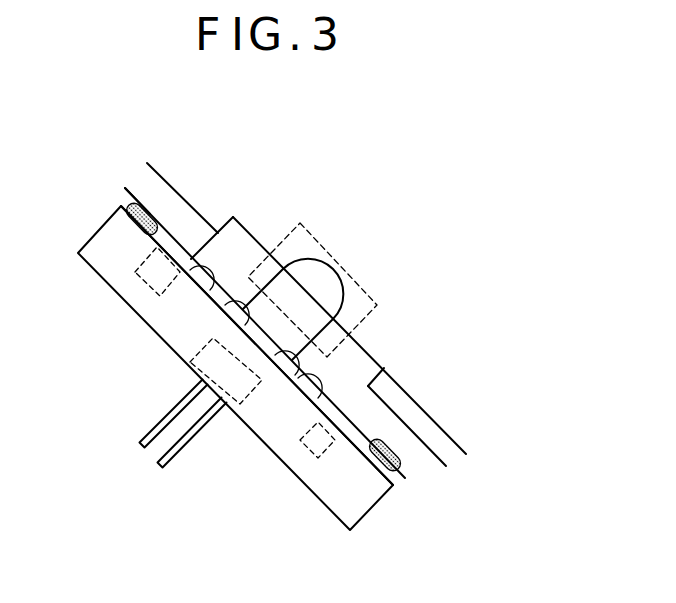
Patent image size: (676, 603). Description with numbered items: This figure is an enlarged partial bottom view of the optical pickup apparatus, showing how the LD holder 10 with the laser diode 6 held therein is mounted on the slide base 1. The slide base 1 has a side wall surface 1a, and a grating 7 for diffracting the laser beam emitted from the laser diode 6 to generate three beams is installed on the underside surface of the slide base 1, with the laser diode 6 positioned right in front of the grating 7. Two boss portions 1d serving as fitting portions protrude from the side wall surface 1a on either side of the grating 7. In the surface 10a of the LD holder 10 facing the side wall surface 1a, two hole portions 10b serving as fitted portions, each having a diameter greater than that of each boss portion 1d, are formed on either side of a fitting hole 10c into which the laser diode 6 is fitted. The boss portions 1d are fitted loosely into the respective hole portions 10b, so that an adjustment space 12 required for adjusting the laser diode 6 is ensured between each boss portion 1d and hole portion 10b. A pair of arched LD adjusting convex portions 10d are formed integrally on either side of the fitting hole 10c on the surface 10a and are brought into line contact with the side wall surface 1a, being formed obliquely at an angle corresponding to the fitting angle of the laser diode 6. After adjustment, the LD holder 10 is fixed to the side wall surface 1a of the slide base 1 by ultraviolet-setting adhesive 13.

The slide base 1 is at (415, 401).
The side wall surface 1a is at (128, 203).
The boss portion 1d is at (170, 232).
The laser diode 6 is at (188, 370).
The grating 7 is at (343, 265).
The LD holder 10 is at (380, 507).
The surface of the LD holder 10a is at (222, 300).
The hole portion 10b is at (137, 270).
The fitting hole 10c is at (240, 390).
The LD adjusting convex portion 10d is at (218, 282).
The adjustment space 12 is at (148, 300).
The ultraviolet-setting adhesive 13 is at (152, 215).